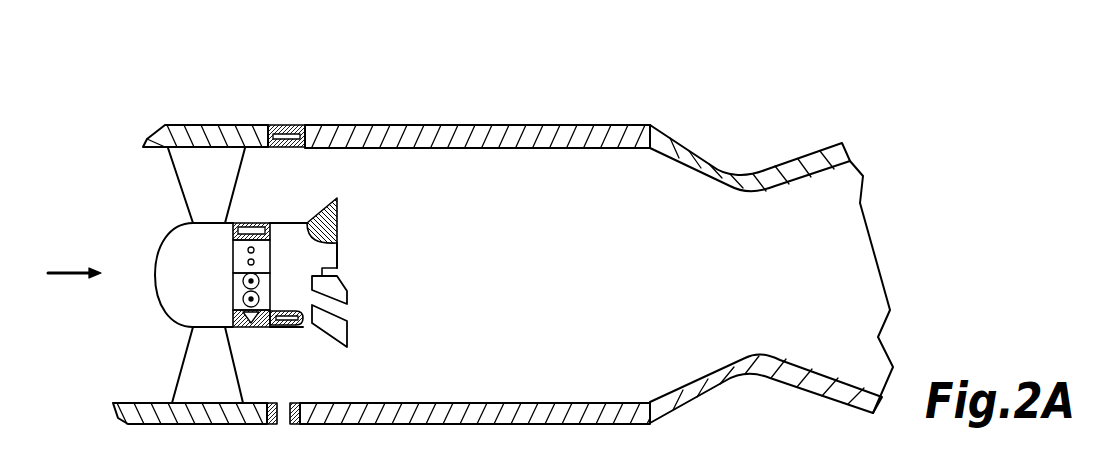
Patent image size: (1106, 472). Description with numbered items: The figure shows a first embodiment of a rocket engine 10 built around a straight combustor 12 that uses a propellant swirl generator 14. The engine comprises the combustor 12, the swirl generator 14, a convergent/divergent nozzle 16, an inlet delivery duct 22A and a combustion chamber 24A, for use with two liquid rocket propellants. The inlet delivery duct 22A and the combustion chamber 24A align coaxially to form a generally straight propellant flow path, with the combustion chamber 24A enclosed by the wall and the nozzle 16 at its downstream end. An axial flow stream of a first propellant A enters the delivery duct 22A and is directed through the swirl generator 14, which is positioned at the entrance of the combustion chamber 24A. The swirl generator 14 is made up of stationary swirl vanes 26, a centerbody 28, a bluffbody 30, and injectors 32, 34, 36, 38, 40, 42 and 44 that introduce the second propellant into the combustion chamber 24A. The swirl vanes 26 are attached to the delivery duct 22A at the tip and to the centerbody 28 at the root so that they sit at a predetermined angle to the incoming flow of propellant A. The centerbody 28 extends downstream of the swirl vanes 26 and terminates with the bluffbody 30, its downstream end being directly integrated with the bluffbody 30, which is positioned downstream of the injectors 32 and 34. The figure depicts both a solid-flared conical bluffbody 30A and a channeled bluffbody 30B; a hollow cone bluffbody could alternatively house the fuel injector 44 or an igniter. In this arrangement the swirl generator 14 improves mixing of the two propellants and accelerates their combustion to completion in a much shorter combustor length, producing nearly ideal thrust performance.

The rocket engine 10 is at (92, 120).
The combustor 12 is at (414, 97).
The swirl generator 14 is at (148, 188).
The convergent/divergent nozzle 16 is at (823, 150).
The inlet delivery duct 22A is at (165, 143).
The combustion chamber 24A is at (490, 126).
The swirl vanes 26 is at (198, 353).
The centerbody 28 is at (273, 223).
The bluffbody 30 is at (355, 354).
The solid-flared conical bluffbody 30A is at (338, 250).
The channeled bluffbody 30B is at (345, 305).
The injector 32 is at (284, 125).
The injector 34 is at (282, 425).
The injector 36 is at (242, 223).
The injector 38 is at (240, 328).
The injector 40 is at (295, 327).
The injector 42 is at (328, 206).
The fuel injector 44 is at (337, 268).
The propellant A is at (64, 273).